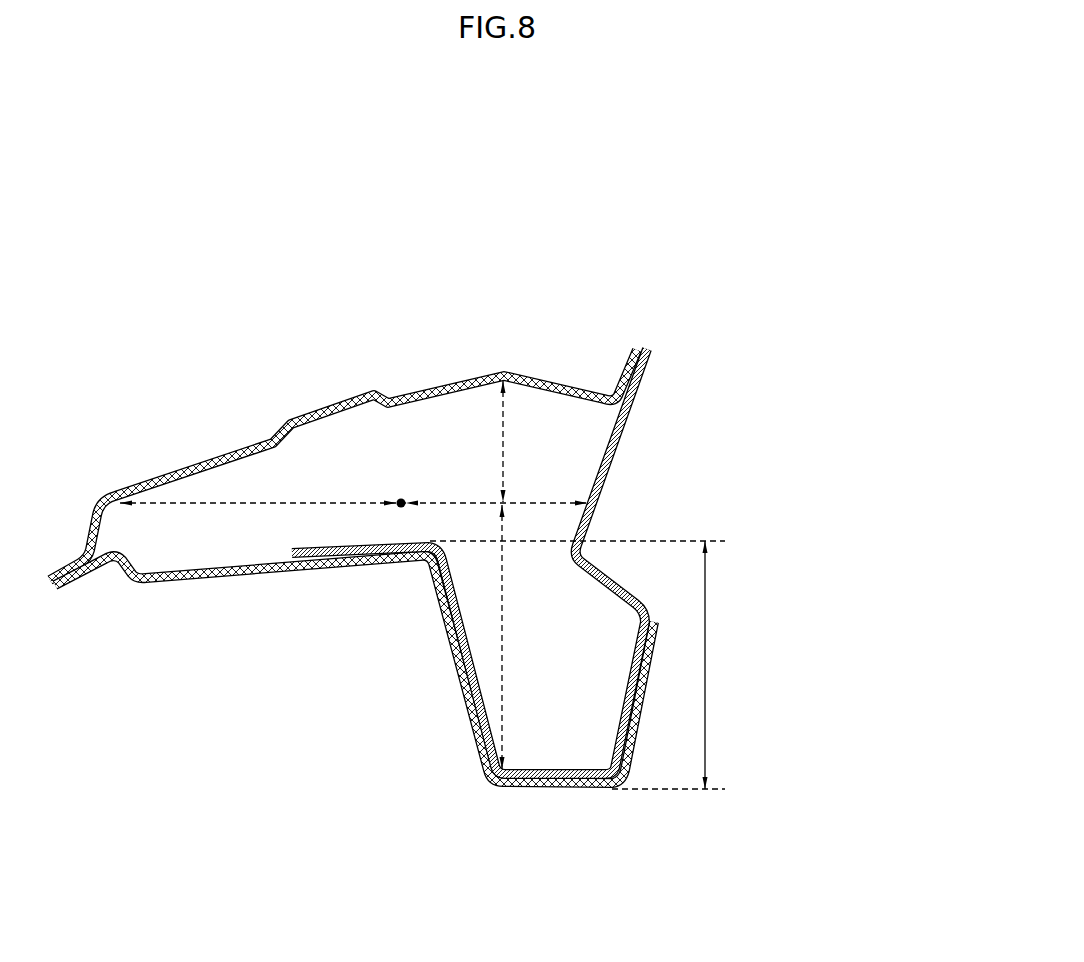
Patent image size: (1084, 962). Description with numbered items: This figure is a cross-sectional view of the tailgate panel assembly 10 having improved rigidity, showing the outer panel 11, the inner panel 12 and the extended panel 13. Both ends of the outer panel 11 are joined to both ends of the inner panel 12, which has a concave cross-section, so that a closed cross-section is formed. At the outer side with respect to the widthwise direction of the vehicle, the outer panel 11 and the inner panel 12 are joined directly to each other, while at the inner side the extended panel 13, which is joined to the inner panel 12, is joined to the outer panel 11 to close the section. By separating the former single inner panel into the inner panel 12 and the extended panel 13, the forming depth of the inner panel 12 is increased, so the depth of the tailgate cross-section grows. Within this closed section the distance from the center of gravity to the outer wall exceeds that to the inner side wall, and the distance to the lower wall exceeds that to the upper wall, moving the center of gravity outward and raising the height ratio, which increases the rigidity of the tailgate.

The tailgate panel assembly 10 is at (659, 293).
The outer panel 11 is at (441, 385).
The inner panel 12 is at (215, 576).
The extended panel 13 is at (623, 595).